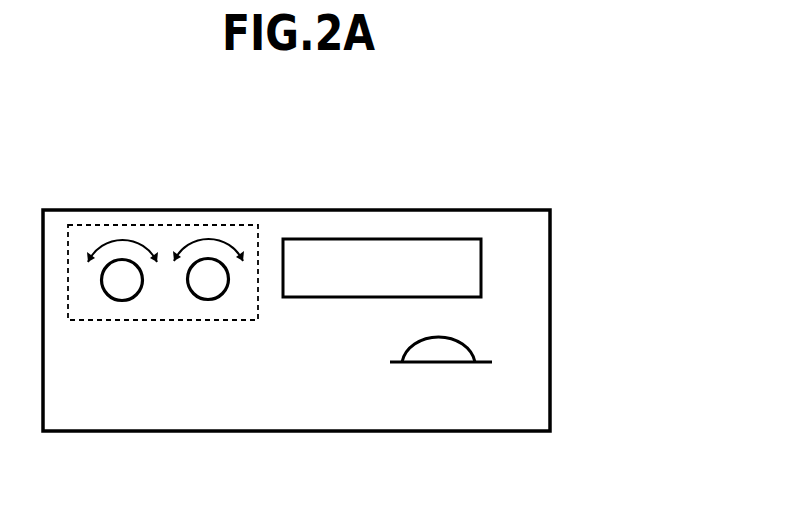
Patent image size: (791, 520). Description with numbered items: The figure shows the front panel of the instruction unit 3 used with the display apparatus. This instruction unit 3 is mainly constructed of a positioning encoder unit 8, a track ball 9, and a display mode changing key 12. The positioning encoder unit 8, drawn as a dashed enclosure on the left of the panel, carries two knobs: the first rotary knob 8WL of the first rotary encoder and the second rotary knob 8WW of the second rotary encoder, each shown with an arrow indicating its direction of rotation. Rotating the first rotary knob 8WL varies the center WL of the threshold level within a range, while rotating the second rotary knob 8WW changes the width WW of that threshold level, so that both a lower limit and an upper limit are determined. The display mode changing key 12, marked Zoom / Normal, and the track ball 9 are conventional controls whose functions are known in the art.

The instruction unit 3 is at (590, 127).
The positioning encoder unit 8 is at (127, 225).
The first rotary knob 8WL is at (115, 302).
The second rotary knob 8WW is at (208, 300).
The display mode changing key 12 is at (315, 238).
The track ball 9 is at (458, 332).